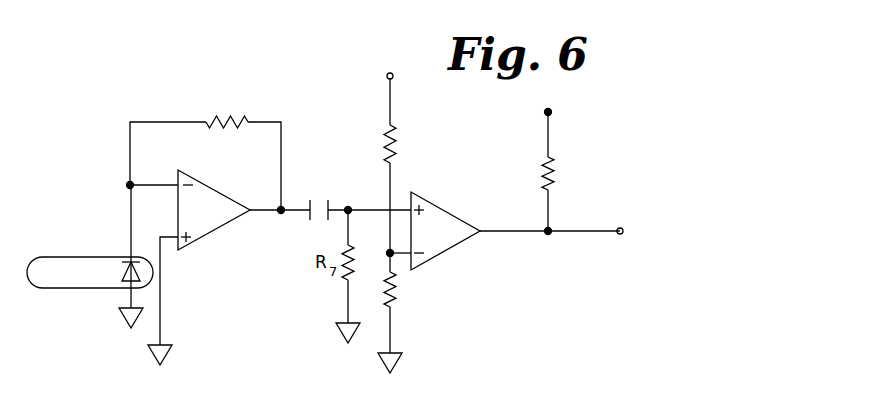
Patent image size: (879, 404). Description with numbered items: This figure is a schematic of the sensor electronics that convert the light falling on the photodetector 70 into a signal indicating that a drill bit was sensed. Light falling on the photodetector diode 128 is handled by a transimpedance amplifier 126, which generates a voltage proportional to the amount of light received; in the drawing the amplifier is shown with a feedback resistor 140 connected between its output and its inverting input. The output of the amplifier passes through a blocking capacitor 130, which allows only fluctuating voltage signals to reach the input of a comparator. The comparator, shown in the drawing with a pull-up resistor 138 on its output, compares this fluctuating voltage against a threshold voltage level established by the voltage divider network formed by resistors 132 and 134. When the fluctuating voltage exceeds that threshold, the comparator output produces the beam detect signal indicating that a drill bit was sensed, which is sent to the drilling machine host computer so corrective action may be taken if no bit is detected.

The photodetector 70 is at (82, 257).
The transimpedance amplifier 126 is at (219, 267).
The photodetector diode 128 is at (89, 256).
The blocking capacitor 130 is at (354, 190).
The resistor 132 is at (413, 171).
The resistor 134 is at (410, 322).
The comparator U2 / resistor R4 138 is at (573, 197).
The feedback resistor R1 140 is at (205, 143).